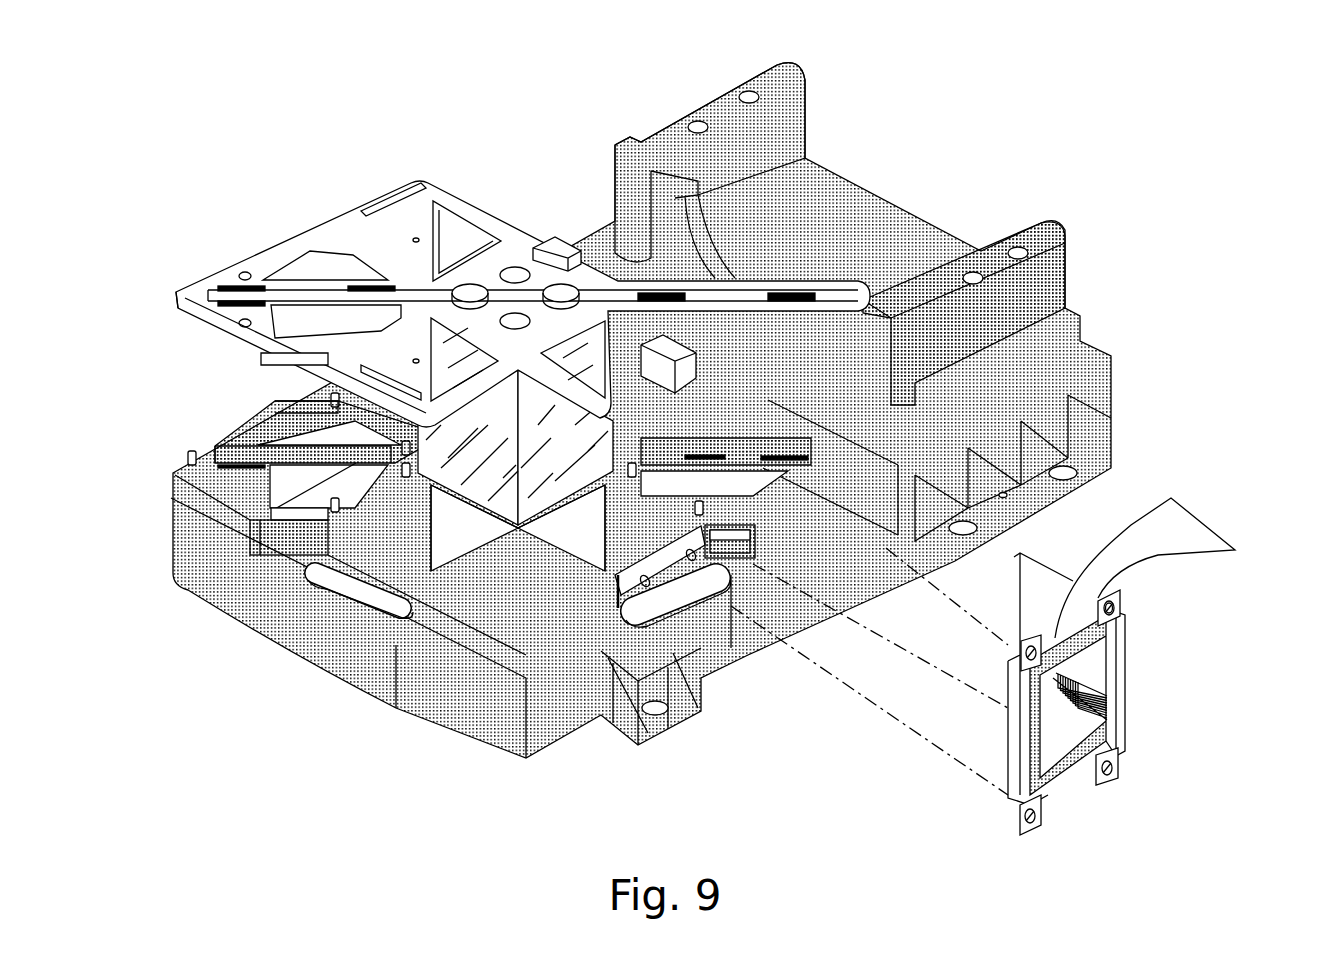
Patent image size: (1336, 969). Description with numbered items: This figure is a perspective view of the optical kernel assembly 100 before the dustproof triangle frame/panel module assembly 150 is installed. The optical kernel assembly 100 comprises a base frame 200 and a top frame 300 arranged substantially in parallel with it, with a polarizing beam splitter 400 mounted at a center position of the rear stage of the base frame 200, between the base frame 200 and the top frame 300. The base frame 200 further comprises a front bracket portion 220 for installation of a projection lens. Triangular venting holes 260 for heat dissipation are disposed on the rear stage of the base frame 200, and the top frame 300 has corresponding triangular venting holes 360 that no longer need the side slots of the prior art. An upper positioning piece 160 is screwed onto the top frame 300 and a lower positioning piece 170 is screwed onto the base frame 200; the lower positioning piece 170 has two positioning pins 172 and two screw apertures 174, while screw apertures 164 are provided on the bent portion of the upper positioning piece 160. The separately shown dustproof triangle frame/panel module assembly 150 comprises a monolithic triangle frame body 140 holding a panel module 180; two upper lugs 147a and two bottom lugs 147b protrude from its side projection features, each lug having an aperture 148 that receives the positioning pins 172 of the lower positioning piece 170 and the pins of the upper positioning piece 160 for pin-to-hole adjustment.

The optical kernel assembly 100 is at (746, 457).
The monolithic triangle frame body 140 is at (1023, 567).
The upper lugs 147a is at (1113, 590).
The bottom lugs 147b is at (1113, 745).
The aperture 148 is at (1113, 610).
The dustproof triangle frame/panel module assembly 150 is at (1112, 675).
The upper positioning piece 160 is at (553, 285).
The clamp block 164 is at (690, 368).
The lower positioning piece 170 is at (648, 622).
The positioning pins 172 is at (757, 523).
The screw apertures 174 is at (727, 540).
The panel module 180 is at (1057, 742).
The base frame 200 is at (1043, 285).
The front bracket portion 220 is at (872, 215).
The triangular venting holes 260 is at (453, 528).
The top frame 300 is at (357, 230).
The triangular venting holes 360 is at (445, 224).
The polarizing beam splitter (PBS) 400 is at (320, 440).